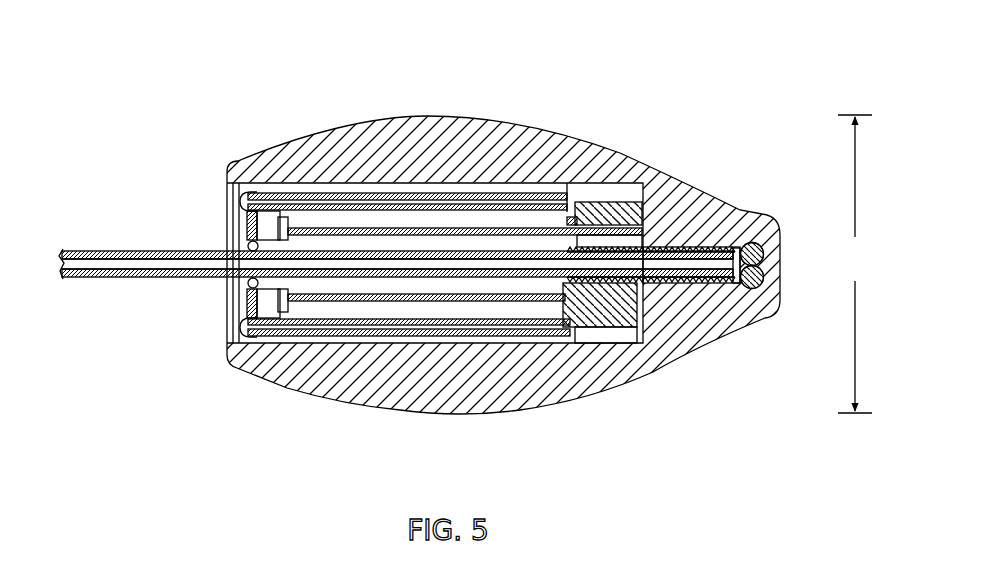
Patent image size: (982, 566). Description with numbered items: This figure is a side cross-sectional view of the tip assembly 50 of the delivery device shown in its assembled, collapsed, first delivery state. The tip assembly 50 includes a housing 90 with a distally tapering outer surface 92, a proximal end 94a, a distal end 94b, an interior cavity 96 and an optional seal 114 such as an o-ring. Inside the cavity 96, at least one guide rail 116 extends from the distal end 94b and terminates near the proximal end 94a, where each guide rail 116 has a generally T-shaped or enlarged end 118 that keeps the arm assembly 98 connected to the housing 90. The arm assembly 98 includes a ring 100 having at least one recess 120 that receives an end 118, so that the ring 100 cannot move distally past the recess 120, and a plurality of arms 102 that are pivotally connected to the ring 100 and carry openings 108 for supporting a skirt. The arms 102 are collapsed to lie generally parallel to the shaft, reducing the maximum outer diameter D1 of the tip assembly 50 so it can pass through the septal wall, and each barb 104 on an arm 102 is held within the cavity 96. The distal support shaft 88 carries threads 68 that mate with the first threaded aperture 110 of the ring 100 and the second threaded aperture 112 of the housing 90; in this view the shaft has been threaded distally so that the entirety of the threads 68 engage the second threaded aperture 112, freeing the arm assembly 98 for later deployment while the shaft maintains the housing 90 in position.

The tip assembly 50 is at (537, 32).
The threads 68 is at (698, 284).
The distal support shaft 88 is at (96, 247).
The housing 90 is at (423, 112).
The distally tapering outer surface 92 is at (650, 172).
The proximal end 94a is at (222, 363).
The distal end 94b is at (782, 216).
The cavity 96 is at (590, 191).
The arm assembly 98 is at (300, 346).
The ring 100 is at (608, 198).
The arms 102 is at (255, 192).
The barb 104 is at (245, 215).
The opening 108 is at (477, 190).
The first threaded aperture 110 is at (612, 296).
The second threaded aperture 112 is at (682, 285).
The seal 114 is at (749, 240).
The guide rail 116 is at (345, 227).
The end 118 is at (284, 221).
The recess 120 is at (571, 204).
The maximum outer diameter D1 is at (855, 264).